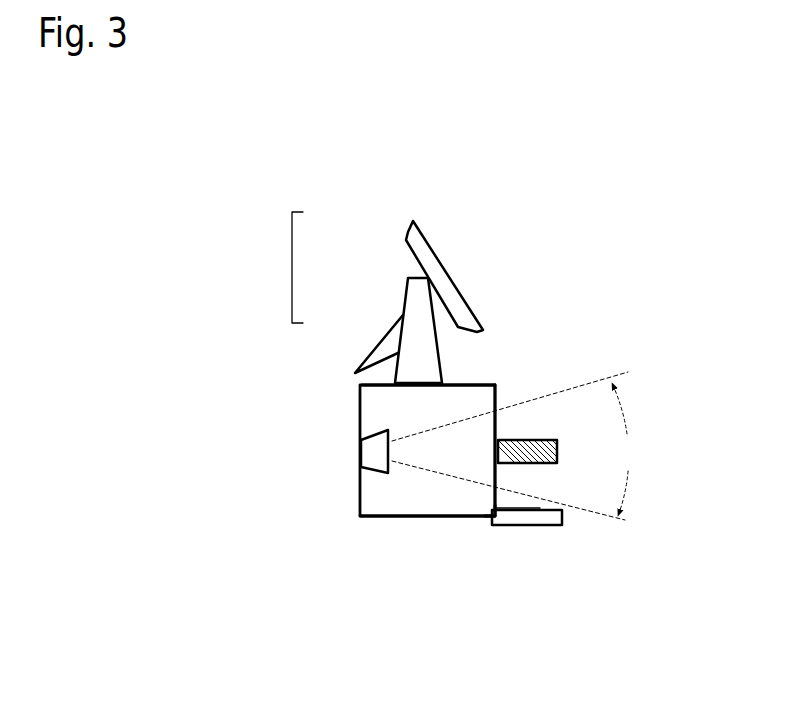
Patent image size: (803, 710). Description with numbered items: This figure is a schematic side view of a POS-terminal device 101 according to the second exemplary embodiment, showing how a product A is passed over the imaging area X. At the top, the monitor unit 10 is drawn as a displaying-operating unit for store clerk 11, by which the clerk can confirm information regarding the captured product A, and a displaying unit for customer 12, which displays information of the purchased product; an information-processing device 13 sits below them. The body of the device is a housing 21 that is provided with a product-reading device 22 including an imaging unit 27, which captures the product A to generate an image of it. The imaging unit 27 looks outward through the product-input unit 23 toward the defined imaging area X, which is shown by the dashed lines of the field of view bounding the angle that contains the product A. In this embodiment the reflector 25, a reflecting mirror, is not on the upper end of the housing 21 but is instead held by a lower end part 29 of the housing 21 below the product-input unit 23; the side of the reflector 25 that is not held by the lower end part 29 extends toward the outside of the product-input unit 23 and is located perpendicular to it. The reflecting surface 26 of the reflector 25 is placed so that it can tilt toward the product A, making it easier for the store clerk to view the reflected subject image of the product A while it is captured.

The POS-terminal device 101 is at (569, 145).
The monitor unit 10 is at (292, 267).
The displaying-operating unit for store clerk 11 is at (407, 236).
The displaying unit for customer 12 is at (378, 347).
The information-processing device 13 is at (412, 378).
The housing 21 is at (411, 517).
The product-reading device 22 is at (375, 503).
The product-input unit 23 is at (493, 463).
The reflector 25 is at (535, 520).
The reflecting surface 26 is at (545, 508).
The imaging unit 27 is at (383, 453).
The lower end part 29 is at (497, 516).
The product A is at (538, 440).
The imaging area X is at (621, 449).